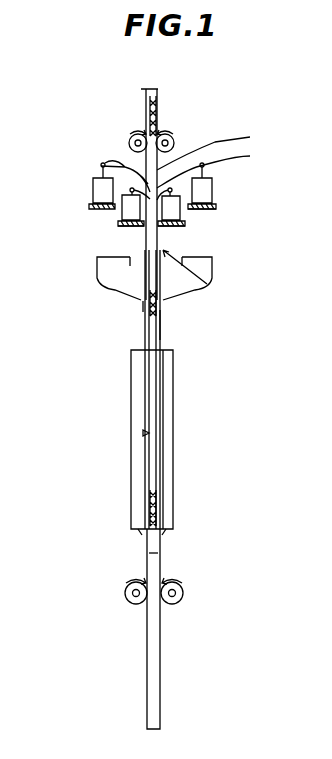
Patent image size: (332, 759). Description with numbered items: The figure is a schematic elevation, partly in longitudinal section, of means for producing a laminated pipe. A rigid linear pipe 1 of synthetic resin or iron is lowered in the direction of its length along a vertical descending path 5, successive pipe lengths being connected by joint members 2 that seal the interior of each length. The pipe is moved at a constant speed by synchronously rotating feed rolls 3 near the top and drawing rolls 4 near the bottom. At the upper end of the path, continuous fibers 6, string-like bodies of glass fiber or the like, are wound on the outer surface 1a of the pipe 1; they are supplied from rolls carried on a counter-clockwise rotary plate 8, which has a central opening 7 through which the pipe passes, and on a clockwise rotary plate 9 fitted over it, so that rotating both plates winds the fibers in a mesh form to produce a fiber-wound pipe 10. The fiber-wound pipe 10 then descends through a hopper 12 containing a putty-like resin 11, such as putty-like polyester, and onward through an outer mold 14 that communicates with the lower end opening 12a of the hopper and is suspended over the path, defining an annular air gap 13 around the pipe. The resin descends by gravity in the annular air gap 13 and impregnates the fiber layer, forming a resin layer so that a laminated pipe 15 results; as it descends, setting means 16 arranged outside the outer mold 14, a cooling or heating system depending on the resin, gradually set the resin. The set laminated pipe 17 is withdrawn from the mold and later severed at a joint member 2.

The pipe 1 is at (160, 97).
The outer surface 1a is at (217, 148).
The joint member 2 is at (148, 117).
The feed rolls 3 is at (130, 149).
The drawing rolls 4 is at (182, 598).
The vertical descending path 5 is at (153, 393).
The continuous fibers 6 is at (100, 166).
The central opening 7 is at (140, 232).
The counter-clockwise rotary plate 8 is at (165, 228).
The clockwise rotary plate 9 is at (215, 210).
The fiber-wound pipe 10 is at (207, 284).
The putty-like resin 11 is at (124, 282).
The hopper 12 is at (163, 295).
The lower end opening 12a is at (140, 300).
The annular air gap 13 is at (160, 325).
The outer mold 14 is at (145, 382).
The laminated pipe 15 is at (143, 433).
The setting means 16 is at (167, 457).
The set laminated pipe 17 is at (160, 553).